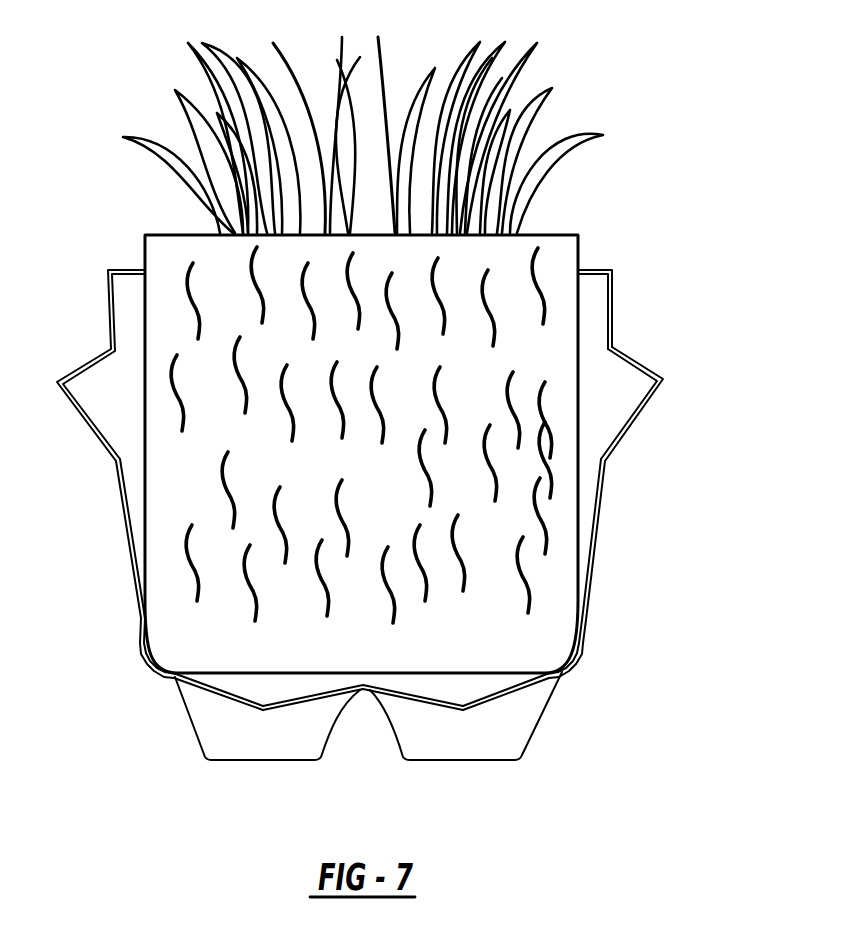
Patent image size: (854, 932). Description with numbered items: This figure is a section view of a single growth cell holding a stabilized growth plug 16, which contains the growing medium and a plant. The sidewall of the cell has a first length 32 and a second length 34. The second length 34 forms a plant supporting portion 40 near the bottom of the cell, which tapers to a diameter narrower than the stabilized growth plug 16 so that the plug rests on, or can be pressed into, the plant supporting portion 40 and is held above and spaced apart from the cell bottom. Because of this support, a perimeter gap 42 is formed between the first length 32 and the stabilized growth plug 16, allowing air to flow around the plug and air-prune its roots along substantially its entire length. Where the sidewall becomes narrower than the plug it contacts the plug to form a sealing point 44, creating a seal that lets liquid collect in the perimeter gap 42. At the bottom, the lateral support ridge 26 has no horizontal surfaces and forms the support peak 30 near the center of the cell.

The stabilized growth plug 16 is at (593, 403).
The perimeter gap 42 is at (603, 437).
The first length 32 is at (605, 510).
The second length 34 is at (582, 640).
The plant supporting portion 40 is at (568, 660).
The support peak 30 is at (363, 690).
The lateral support ridge 26 is at (263, 708).
The sealing point 44 is at (143, 632).